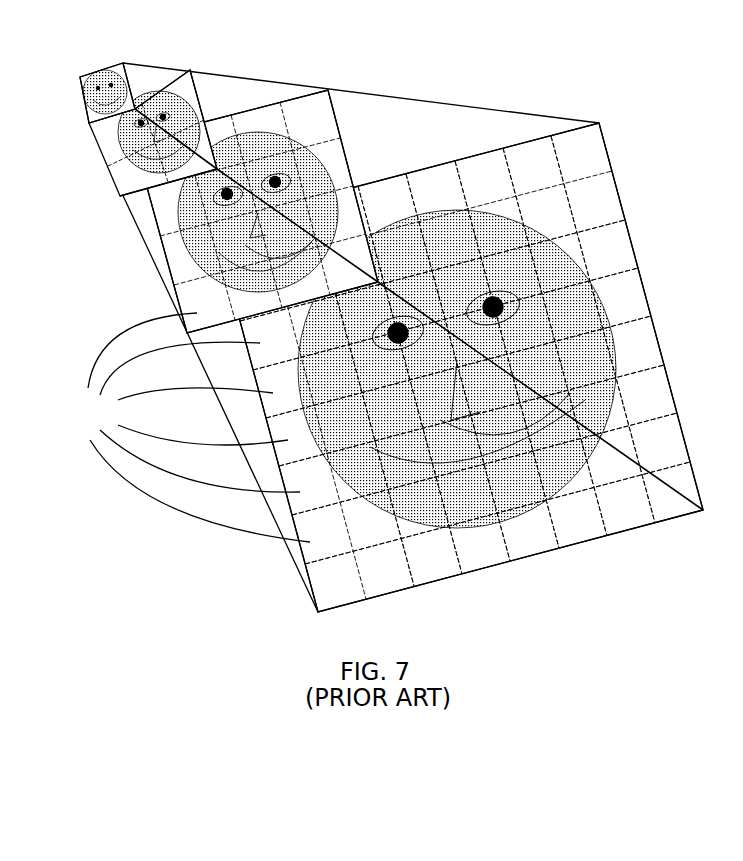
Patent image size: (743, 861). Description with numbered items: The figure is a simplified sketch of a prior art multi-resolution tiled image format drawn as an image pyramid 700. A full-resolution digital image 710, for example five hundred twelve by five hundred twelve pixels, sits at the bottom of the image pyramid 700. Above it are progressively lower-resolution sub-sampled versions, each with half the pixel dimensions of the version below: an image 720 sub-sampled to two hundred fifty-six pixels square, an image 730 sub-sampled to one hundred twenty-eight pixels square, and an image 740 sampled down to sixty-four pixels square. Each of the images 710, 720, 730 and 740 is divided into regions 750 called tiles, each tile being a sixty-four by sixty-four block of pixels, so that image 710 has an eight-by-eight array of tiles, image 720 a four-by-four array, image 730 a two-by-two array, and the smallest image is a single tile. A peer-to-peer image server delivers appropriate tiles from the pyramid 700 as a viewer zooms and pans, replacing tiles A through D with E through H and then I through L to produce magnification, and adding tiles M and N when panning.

The image pyramid 700 is at (497, 77).
The digital image 710 is at (458, 361).
The image 720 is at (367, 213).
The image 730 is at (216, 145).
The image 740 is at (137, 102).
The regions (tiles) 750 is at (196, 427).